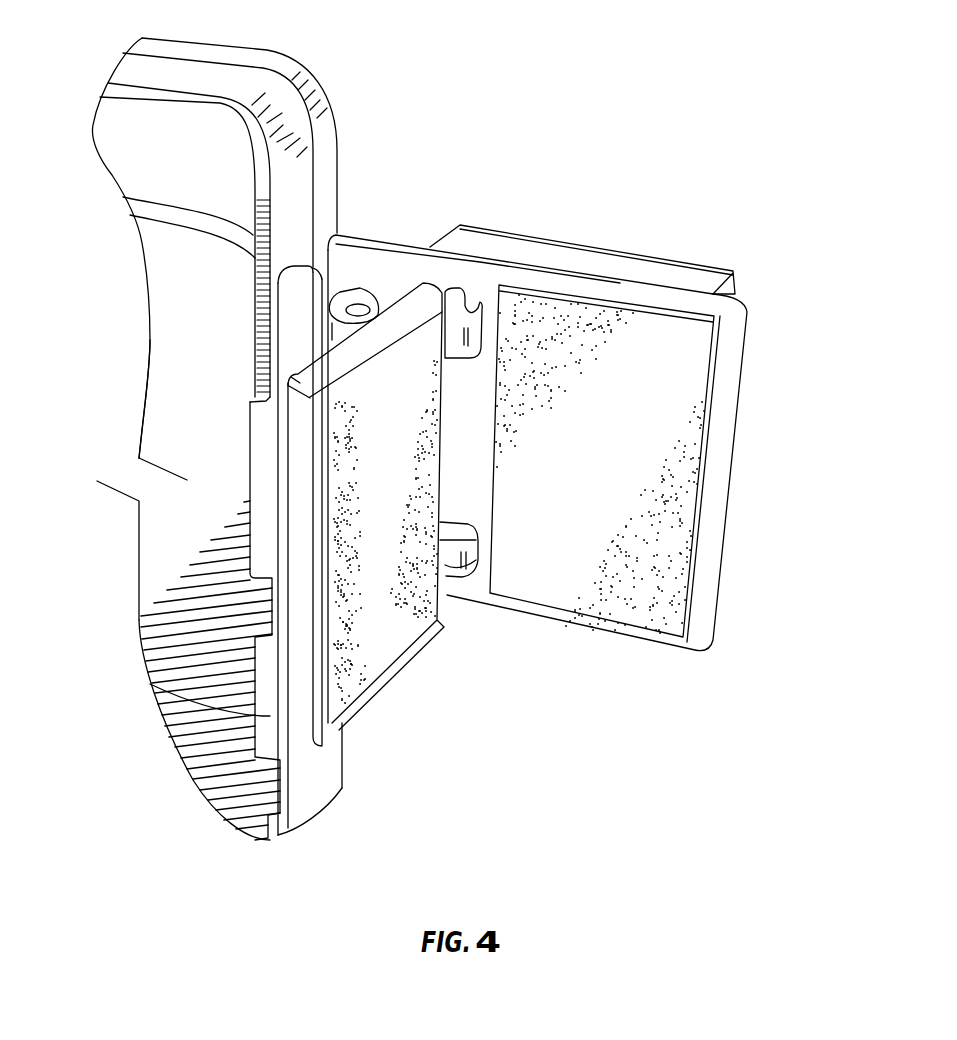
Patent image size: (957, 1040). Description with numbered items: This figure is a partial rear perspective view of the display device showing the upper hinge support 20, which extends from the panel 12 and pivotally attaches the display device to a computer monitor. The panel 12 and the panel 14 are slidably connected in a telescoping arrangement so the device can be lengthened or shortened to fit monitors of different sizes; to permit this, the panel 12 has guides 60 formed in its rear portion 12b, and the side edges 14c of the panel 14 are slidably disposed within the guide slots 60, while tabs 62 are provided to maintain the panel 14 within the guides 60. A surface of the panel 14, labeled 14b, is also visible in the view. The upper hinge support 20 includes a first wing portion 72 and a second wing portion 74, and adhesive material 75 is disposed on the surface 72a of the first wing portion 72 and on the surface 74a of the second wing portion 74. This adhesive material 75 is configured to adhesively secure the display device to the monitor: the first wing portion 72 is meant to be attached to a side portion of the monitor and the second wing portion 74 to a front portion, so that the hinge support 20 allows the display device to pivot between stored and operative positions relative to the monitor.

The panel 12 is at (252, 90).
The rear portion 12b is at (176, 160).
The guides 60 is at (250, 198).
The panel 14 is at (160, 283).
The side edges 14c is at (247, 340).
The panel surface 14b is at (214, 455).
The tabs 62 is at (250, 490).
The upper hinge support 20 is at (392, 243).
The first wing portion 72 is at (322, 746).
The surface 72a is at (350, 367).
The second wing portion 74 is at (697, 642).
The surface 74a is at (720, 423).
The adhesive material 75 is at (375, 633).